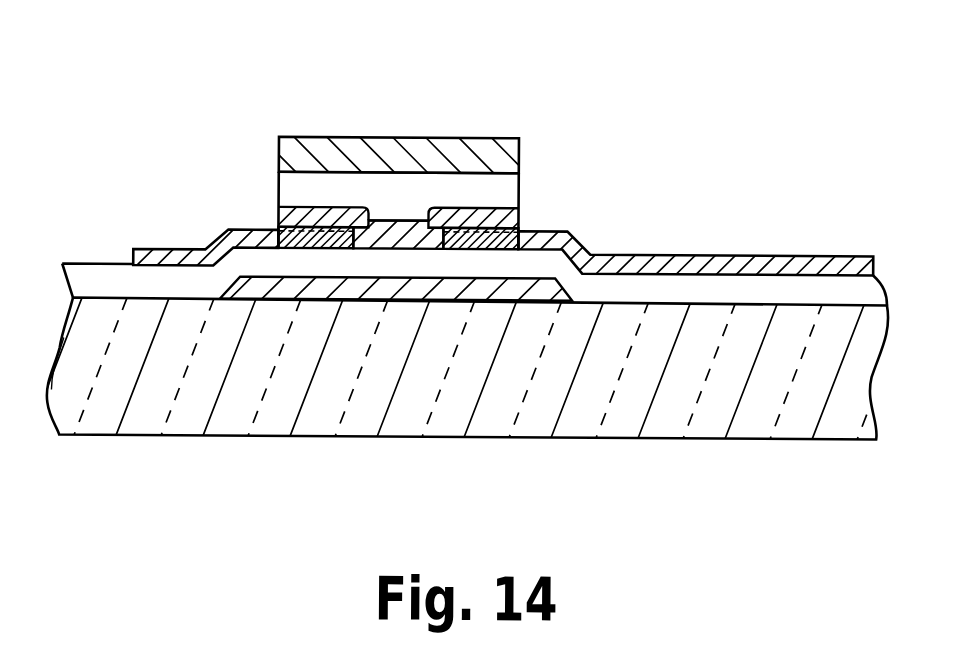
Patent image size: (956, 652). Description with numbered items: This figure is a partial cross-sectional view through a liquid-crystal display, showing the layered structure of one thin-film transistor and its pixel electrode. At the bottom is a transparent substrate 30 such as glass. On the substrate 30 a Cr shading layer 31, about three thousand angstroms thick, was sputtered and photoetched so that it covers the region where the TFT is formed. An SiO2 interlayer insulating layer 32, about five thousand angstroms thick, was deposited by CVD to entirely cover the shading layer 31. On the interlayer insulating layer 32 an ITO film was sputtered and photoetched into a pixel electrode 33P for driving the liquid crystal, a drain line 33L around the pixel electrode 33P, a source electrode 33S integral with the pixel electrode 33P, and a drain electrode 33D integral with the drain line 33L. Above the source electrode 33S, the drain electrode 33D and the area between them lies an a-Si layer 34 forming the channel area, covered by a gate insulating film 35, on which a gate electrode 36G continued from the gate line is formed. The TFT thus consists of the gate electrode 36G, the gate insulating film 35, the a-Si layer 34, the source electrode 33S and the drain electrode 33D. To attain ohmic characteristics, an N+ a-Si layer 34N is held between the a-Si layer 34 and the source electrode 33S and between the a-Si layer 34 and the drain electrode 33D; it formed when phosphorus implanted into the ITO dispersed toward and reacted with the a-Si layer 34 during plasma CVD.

The transparent substrate 30 is at (801, 400).
The shading layer 31 is at (411, 284).
The interlayer insulating layer 32 is at (838, 290).
The drain line 33L is at (140, 252).
The drain electrode 33D is at (250, 229).
The source electrode 33S is at (543, 233).
The pixel electrode 33P is at (716, 255).
The a-Si layer 34 is at (455, 200).
The N+ a-Si layer 34N is at (297, 208).
The gate insulating film 35 is at (406, 193).
The gate electrode 36G is at (352, 152).